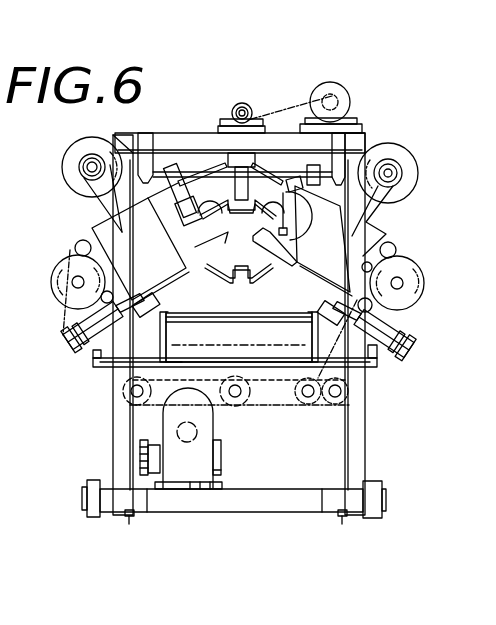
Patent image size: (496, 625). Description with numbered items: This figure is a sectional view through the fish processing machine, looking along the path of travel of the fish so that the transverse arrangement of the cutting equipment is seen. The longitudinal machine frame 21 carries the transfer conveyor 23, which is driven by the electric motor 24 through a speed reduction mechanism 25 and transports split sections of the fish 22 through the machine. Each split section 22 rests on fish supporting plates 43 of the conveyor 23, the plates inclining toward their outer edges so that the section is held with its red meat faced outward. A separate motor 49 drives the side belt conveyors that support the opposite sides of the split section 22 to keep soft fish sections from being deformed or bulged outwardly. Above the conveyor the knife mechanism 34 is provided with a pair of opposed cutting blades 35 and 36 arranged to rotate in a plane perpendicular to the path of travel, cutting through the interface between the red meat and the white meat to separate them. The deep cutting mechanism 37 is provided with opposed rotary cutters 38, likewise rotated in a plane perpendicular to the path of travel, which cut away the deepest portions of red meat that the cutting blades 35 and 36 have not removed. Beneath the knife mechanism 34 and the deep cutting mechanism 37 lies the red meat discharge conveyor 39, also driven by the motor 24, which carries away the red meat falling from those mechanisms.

The longitudinal machine frame 21 is at (118, 427).
The split section of the fish 22 is at (196, 160).
The conveyor 23 is at (72, 353).
The electric motor 24 is at (222, 463).
The speed reduction mechanism 25 is at (190, 455).
The knife mechanism 34 is at (370, 245).
The cutting blade 35 is at (292, 193).
The cutting blade 36 is at (285, 224).
The deep cutting mechanism 37 is at (147, 246).
The rotary cutter 38 is at (222, 211).
The red meat discharge conveyor 39 is at (238, 312).
The fish supporting plate 43 is at (240, 102).
The motor 49 is at (338, 96).